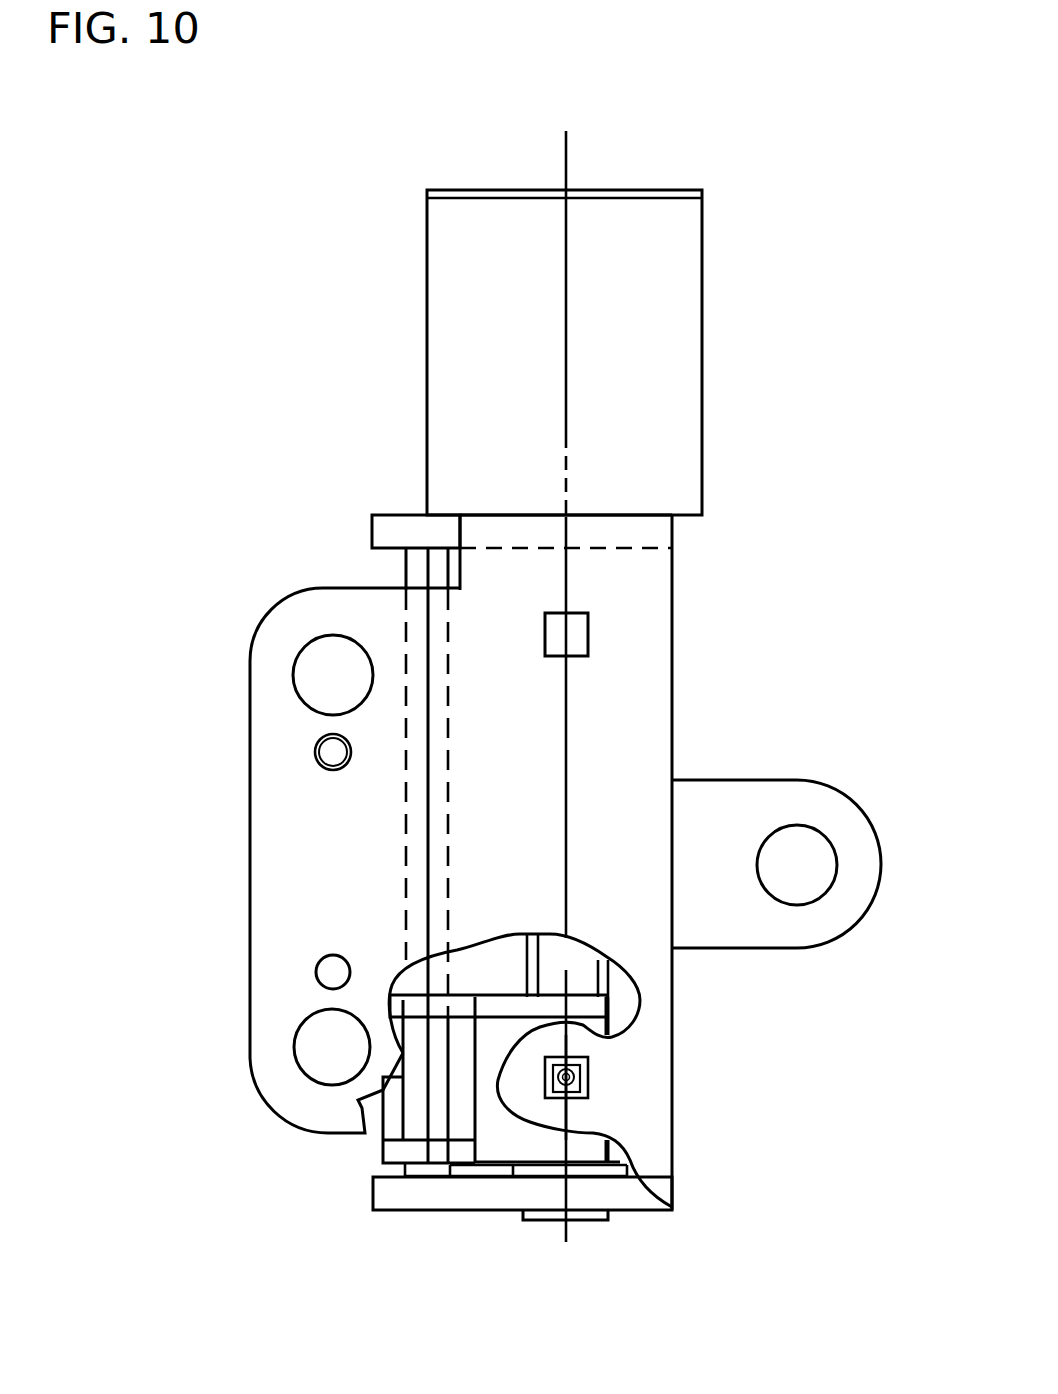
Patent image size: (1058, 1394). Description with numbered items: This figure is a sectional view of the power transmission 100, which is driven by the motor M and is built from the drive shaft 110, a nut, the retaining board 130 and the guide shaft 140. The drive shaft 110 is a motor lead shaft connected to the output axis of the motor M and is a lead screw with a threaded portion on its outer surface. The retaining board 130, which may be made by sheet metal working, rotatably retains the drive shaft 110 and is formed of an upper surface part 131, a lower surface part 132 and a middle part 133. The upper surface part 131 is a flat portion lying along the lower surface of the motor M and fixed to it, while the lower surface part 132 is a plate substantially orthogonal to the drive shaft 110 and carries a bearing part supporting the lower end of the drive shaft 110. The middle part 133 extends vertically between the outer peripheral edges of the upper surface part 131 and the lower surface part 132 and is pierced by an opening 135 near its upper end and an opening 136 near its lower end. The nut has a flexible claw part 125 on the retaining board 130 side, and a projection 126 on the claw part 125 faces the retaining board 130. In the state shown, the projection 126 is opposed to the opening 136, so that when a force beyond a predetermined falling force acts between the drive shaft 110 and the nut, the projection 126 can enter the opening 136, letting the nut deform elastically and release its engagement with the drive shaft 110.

The motor M is at (640, 359).
The power transmission 100 is at (170, 637).
The drive shaft 110 is at (550, 952).
The claw part 125 is at (503, 1018).
The projection 126 is at (588, 1077).
The retaining board 130 is at (745, 567).
The upper surface part 131 is at (360, 525).
The lower surface part 132 is at (420, 1202).
The middle part 133 is at (605, 748).
The opening 135 is at (588, 632).
The opening 136 is at (585, 1100).
The guide shaft 140 is at (403, 822).